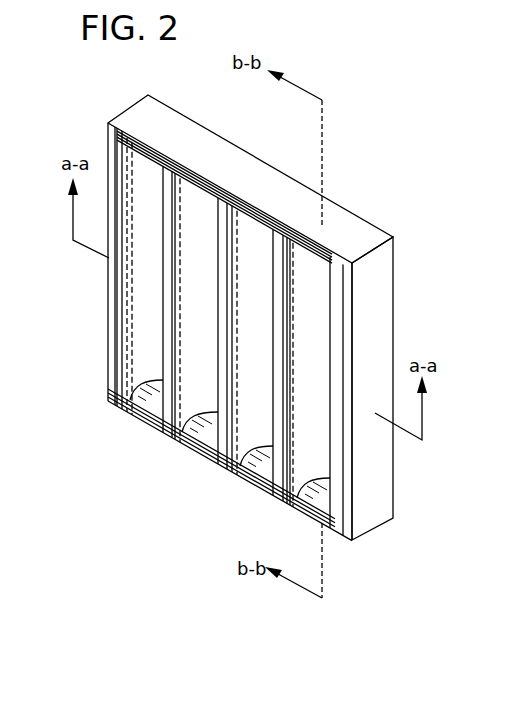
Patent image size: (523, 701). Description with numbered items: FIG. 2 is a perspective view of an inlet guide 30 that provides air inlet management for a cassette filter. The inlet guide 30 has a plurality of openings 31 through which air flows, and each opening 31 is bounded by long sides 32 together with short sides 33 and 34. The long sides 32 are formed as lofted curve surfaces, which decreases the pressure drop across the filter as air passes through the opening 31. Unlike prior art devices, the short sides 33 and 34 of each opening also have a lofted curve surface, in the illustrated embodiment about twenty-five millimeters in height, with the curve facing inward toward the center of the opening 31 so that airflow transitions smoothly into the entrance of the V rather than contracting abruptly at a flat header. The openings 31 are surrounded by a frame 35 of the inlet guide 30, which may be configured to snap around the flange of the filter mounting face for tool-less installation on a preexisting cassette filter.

The inlet guide 30 is at (366, 150).
The opening 31 is at (155, 322).
The long sides 32 is at (207, 289).
The short side 33 is at (190, 178).
The short side 34 is at (197, 437).
The frame 35 is at (378, 227).